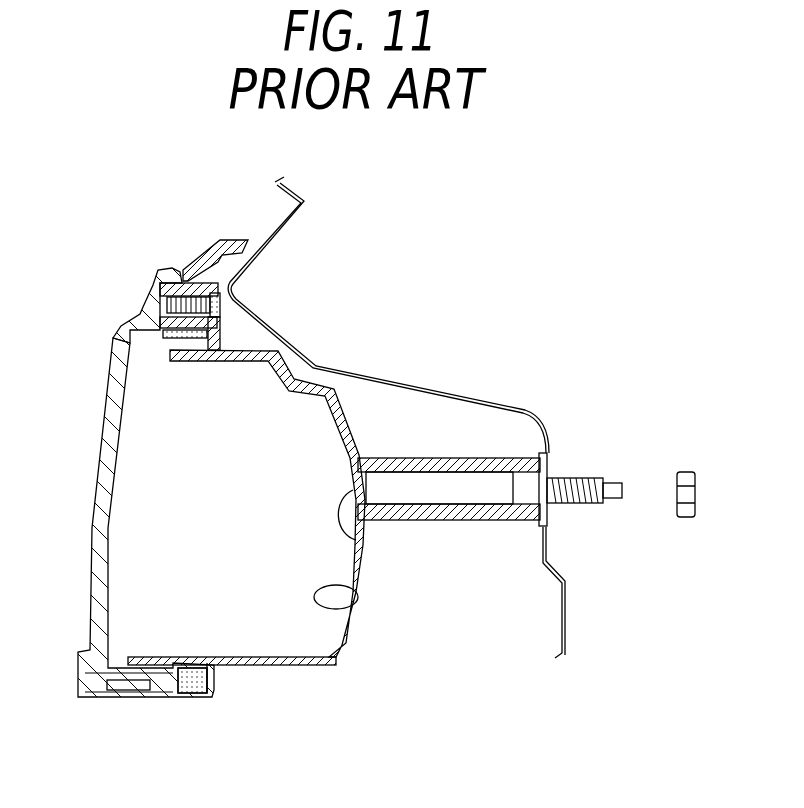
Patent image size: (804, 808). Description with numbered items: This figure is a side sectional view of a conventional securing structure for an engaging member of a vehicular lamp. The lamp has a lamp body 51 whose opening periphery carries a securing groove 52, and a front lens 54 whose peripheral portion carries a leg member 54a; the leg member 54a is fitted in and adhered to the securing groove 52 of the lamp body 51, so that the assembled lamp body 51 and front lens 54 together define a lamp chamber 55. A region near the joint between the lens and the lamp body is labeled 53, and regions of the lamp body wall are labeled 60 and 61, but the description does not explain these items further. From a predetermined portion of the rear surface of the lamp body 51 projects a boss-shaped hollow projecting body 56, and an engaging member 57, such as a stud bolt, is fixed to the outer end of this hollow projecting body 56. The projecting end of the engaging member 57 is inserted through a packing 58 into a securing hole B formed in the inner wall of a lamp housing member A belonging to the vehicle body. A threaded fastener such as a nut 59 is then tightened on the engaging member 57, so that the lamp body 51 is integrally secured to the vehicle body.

The lamp body 51 is at (350, 638).
The securing groove 52 is at (189, 695).
The flange of housing 53 is at (160, 669).
The front lens 54 is at (95, 504).
The leg member 54a is at (217, 680).
The lamp chamber 55 is at (290, 642).
The hollow projecting body 56 is at (441, 458).
The engaging member 57 is at (596, 480).
The packing 58 is at (543, 456).
The nut 59 is at (681, 519).
The ring portion 60 is at (355, 597).
The bulge 61 is at (358, 538).
The lamp housing member A is at (367, 390).
The securing hole B is at (553, 473).